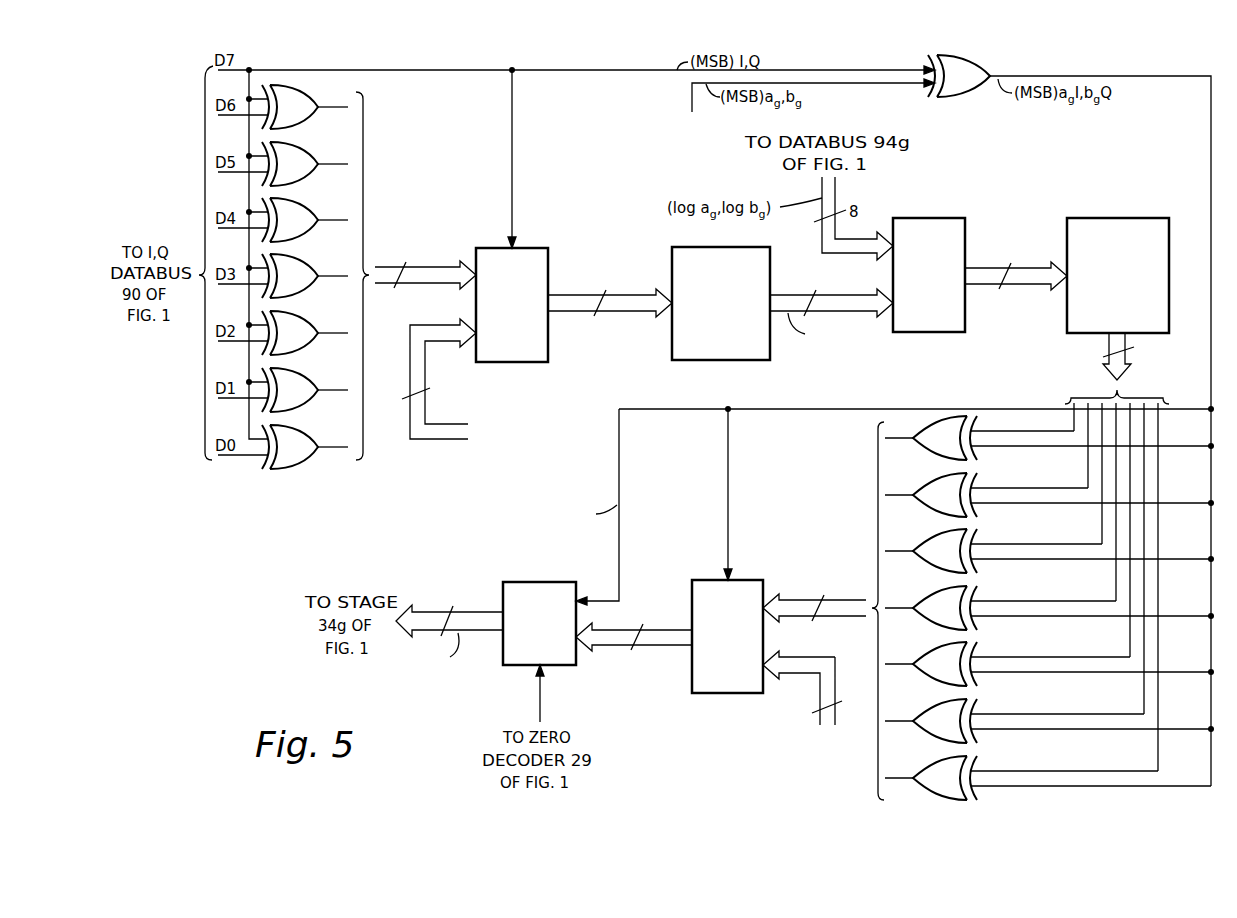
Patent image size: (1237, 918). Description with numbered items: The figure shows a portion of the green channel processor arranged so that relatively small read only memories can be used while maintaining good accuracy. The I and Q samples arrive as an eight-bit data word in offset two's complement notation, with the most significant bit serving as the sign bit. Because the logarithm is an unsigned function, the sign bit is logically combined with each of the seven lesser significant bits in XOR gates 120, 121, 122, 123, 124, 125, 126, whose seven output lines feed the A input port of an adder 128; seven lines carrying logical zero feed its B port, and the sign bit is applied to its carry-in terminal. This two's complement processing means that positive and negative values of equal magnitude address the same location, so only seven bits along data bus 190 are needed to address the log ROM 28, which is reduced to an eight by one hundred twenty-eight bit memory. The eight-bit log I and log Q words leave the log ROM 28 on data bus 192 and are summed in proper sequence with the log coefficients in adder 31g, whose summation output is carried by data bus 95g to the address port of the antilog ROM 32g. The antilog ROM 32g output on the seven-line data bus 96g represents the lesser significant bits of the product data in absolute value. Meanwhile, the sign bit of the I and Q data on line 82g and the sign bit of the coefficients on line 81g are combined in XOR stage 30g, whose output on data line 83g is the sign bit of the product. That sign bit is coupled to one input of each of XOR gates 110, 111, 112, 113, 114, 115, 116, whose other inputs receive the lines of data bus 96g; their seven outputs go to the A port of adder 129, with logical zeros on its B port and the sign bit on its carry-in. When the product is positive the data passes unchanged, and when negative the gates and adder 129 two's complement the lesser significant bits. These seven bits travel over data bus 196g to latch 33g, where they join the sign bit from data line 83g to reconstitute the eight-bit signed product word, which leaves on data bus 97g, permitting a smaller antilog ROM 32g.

The XOR gate 120 is at (303, 461).
The XOR gate 121 is at (303, 404).
The XOR gate 122 is at (303, 347).
The XOR gate 123 is at (303, 290).
The XOR gate 124 is at (303, 234).
The XOR gate 125 is at (303, 178).
The XOR gate 126 is at (303, 121).
The adder 128 is at (512, 362).
The data bus 190 is at (611, 313).
The log ROM 28 is at (705, 360).
The data bus 192 is at (862, 300).
The adder 31g is at (932, 332).
The data bus 95g is at (1022, 285).
The antilog ROM 32g is at (1112, 218).
The data bus 96g is at (1103, 350).
The XOR stage 30g is at (971, 97).
The MSB data line 82g is at (575, 70).
The MSB data line 81g is at (692, 100).
The data line 83g is at (617, 453).
The latch 33g is at (534, 581).
The data bus 97g is at (470, 612).
The data bus 196g is at (614, 647).
The adder 129 is at (727, 693).
The XOR gate 110 is at (929, 791).
The XOR gate 111 is at (929, 734).
The XOR gate 112 is at (929, 677).
The XOR gate 113 is at (929, 621).
The XOR gate 114 is at (929, 564).
The XOR gate 115 is at (929, 508).
The XOR gate 116 is at (929, 451).